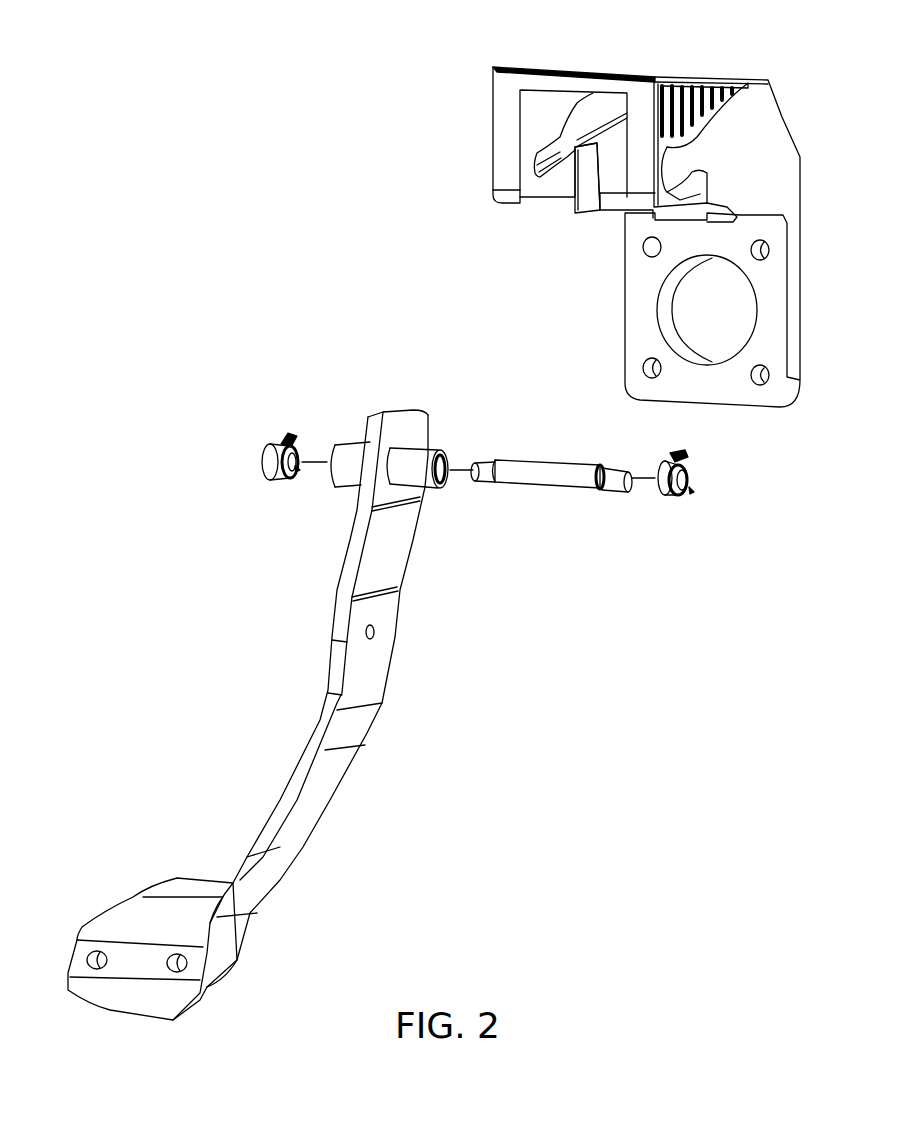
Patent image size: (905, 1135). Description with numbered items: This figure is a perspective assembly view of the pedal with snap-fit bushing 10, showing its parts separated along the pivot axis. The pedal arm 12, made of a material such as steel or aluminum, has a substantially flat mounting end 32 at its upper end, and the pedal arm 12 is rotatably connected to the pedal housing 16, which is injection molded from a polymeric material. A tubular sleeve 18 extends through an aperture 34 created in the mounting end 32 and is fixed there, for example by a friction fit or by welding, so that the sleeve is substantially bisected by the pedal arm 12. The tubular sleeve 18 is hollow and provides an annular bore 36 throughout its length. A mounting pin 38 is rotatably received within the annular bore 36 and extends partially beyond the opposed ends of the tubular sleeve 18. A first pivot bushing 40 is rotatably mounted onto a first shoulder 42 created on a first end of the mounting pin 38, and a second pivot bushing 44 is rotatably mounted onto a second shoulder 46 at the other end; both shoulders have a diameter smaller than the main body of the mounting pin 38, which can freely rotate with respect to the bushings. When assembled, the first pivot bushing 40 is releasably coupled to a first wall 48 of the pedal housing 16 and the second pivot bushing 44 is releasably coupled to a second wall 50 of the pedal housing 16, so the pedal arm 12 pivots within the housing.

The pedal with snap-fit bushing 10 is at (784, 60).
The pedal arm 12 is at (308, 808).
The pedal housing 16 is at (766, 127).
The tubular sleeve 18 is at (346, 474).
The mounting end 32 is at (420, 433).
The aperture 34 is at (410, 477).
The annular bore 36 is at (452, 476).
The mounting pin 38 is at (548, 463).
The first pivot bushing 40 is at (665, 497).
The first shoulder 42 is at (613, 483).
The second pivot bushing 44 is at (272, 470).
The second shoulder 46 is at (487, 461).
The first wall 48 is at (640, 185).
The second wall 50 is at (507, 120).